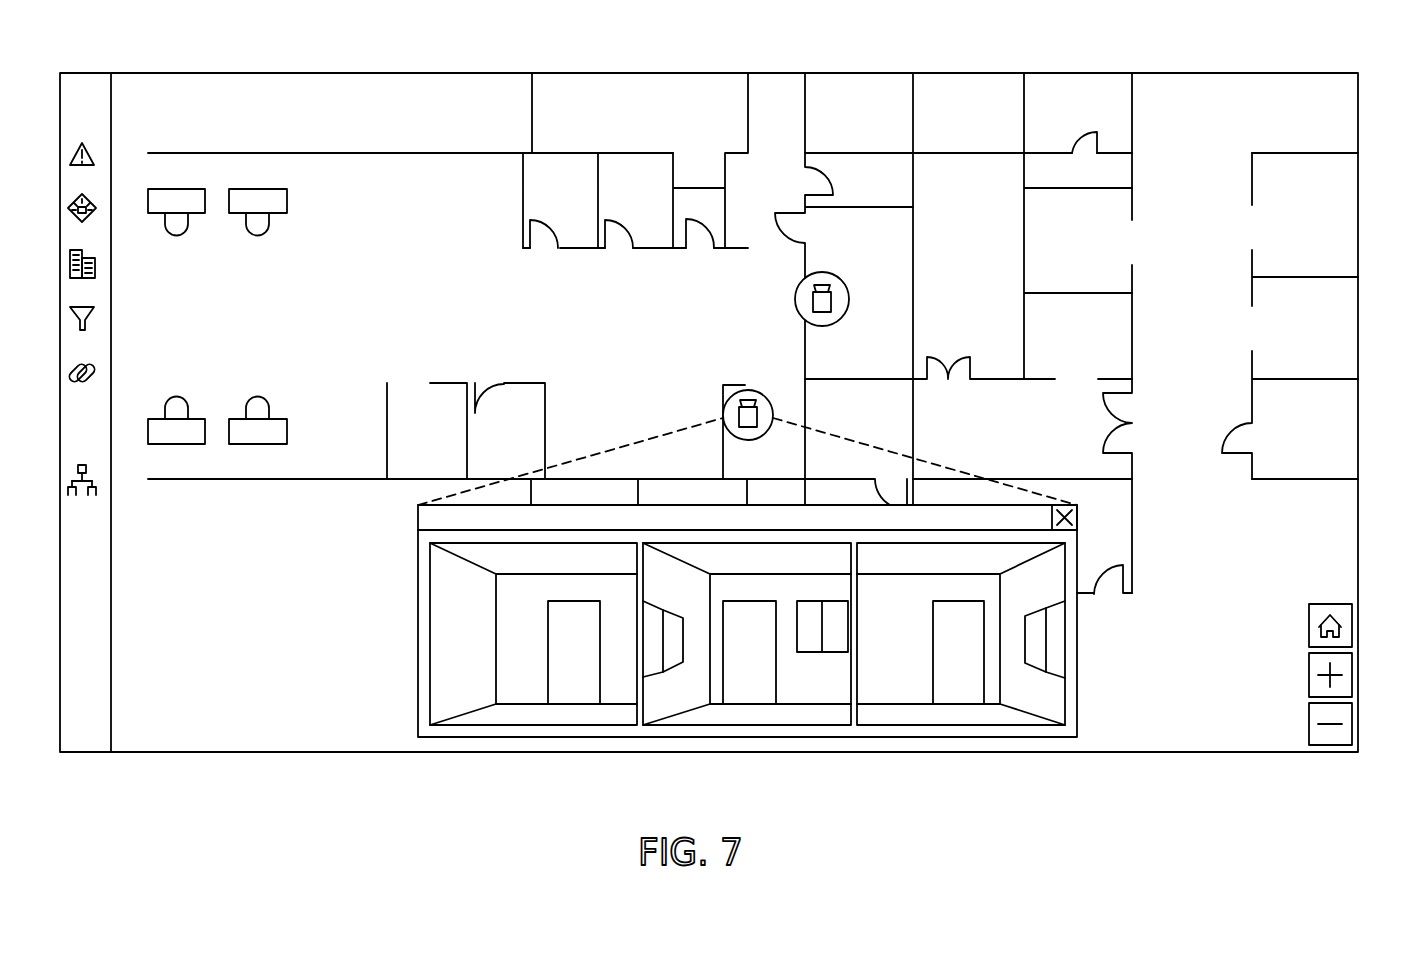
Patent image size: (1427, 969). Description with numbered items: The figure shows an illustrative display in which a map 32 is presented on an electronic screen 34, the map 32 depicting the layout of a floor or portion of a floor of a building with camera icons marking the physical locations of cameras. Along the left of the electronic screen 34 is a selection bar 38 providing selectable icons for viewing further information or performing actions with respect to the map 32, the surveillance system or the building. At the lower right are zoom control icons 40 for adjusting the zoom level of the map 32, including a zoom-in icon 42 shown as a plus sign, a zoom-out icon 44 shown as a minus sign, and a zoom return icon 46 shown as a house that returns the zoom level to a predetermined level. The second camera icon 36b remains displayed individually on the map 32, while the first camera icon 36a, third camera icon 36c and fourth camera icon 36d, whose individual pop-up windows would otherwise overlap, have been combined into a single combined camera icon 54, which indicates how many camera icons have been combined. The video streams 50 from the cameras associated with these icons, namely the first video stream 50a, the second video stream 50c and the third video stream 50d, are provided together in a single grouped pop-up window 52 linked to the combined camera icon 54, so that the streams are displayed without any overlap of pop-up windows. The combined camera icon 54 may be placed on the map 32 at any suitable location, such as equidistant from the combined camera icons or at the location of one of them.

The map 32 is at (1215, 95).
The electronic screen 34 is at (1300, 73).
The first camera icon 36a is at (747, 431).
The second camera icon 36b is at (822, 272).
The third camera icon 36c is at (747, 431).
The fourth camera icon 36d is at (747, 431).
The selection bar 38 is at (85, 83).
The zoom control icons 40 is at (1292, 698).
The zoom-in icon 42 is at (1352, 677).
The zoom-out icon 44 is at (1352, 725).
The zoom return icon 46 is at (1352, 627).
The video streams 50 is at (533, 666).
The first video stream 50a is at (583, 725).
The second video stream 50c is at (720, 725).
The third video stream 50d is at (933, 725).
The grouped pop-up window 52 is at (1080, 641).
The combined camera icon 54 is at (754, 390).